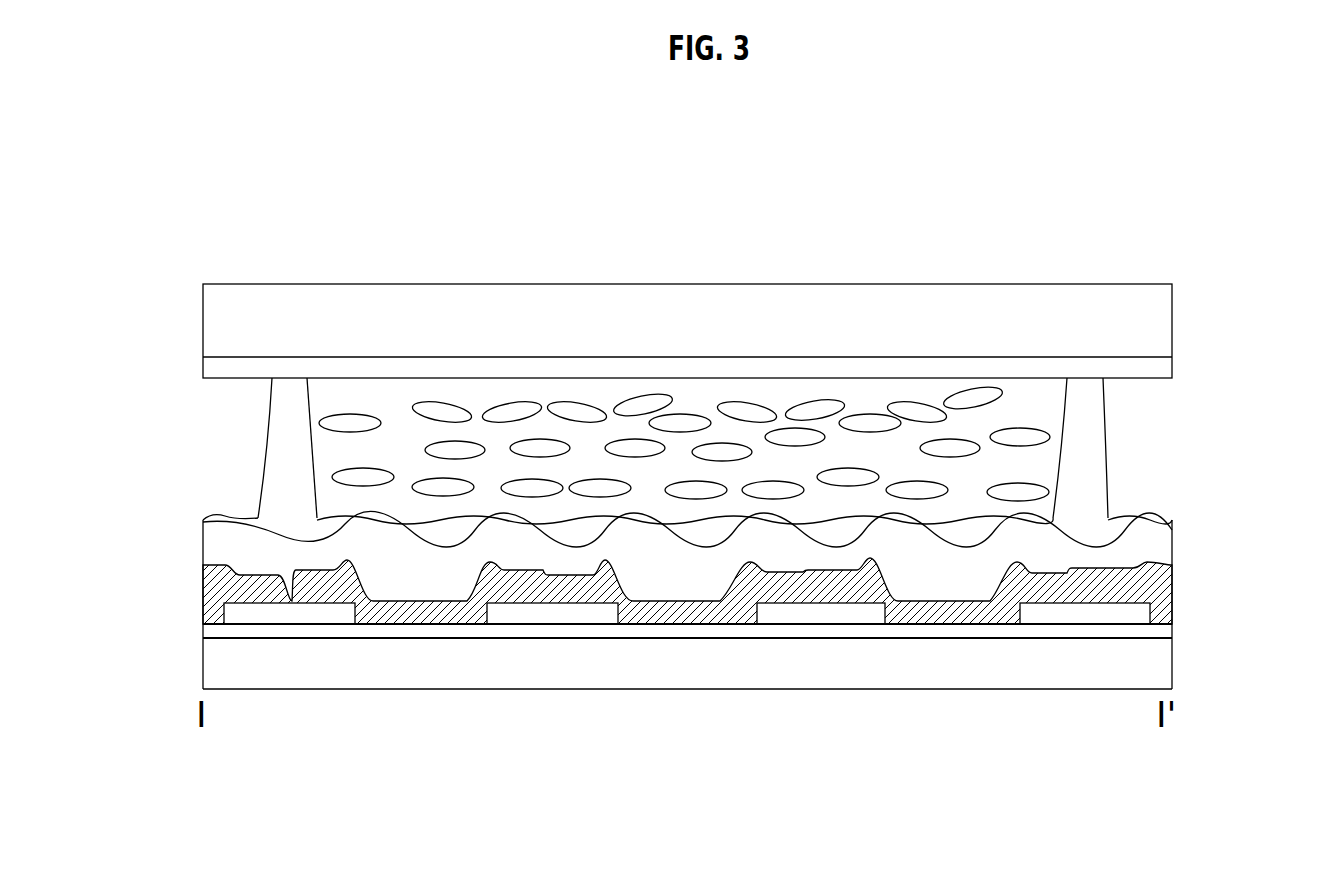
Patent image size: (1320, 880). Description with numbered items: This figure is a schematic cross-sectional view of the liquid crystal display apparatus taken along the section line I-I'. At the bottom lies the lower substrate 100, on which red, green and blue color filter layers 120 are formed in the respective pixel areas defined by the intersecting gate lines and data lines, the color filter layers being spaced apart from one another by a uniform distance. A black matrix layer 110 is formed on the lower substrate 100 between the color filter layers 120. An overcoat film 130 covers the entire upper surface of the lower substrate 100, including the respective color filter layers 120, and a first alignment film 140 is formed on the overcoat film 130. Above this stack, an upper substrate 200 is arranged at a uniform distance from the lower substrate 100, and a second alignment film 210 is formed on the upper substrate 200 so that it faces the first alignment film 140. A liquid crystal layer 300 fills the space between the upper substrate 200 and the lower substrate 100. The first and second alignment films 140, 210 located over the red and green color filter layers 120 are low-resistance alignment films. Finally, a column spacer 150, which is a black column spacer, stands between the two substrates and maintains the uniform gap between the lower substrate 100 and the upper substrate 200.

The lower substrate 100 is at (1150, 660).
The black matrix layer 110 is at (1135, 615).
The color filter layers 120 is at (1158, 580).
The overcoat film 130 is at (228, 547).
The first alignment film 140 is at (1110, 518).
The column spacer 150 is at (268, 445).
The upper substrate 200 is at (1157, 300).
The second alignment film 210 is at (1157, 371).
The liquid crystal layer 300 is at (1035, 462).